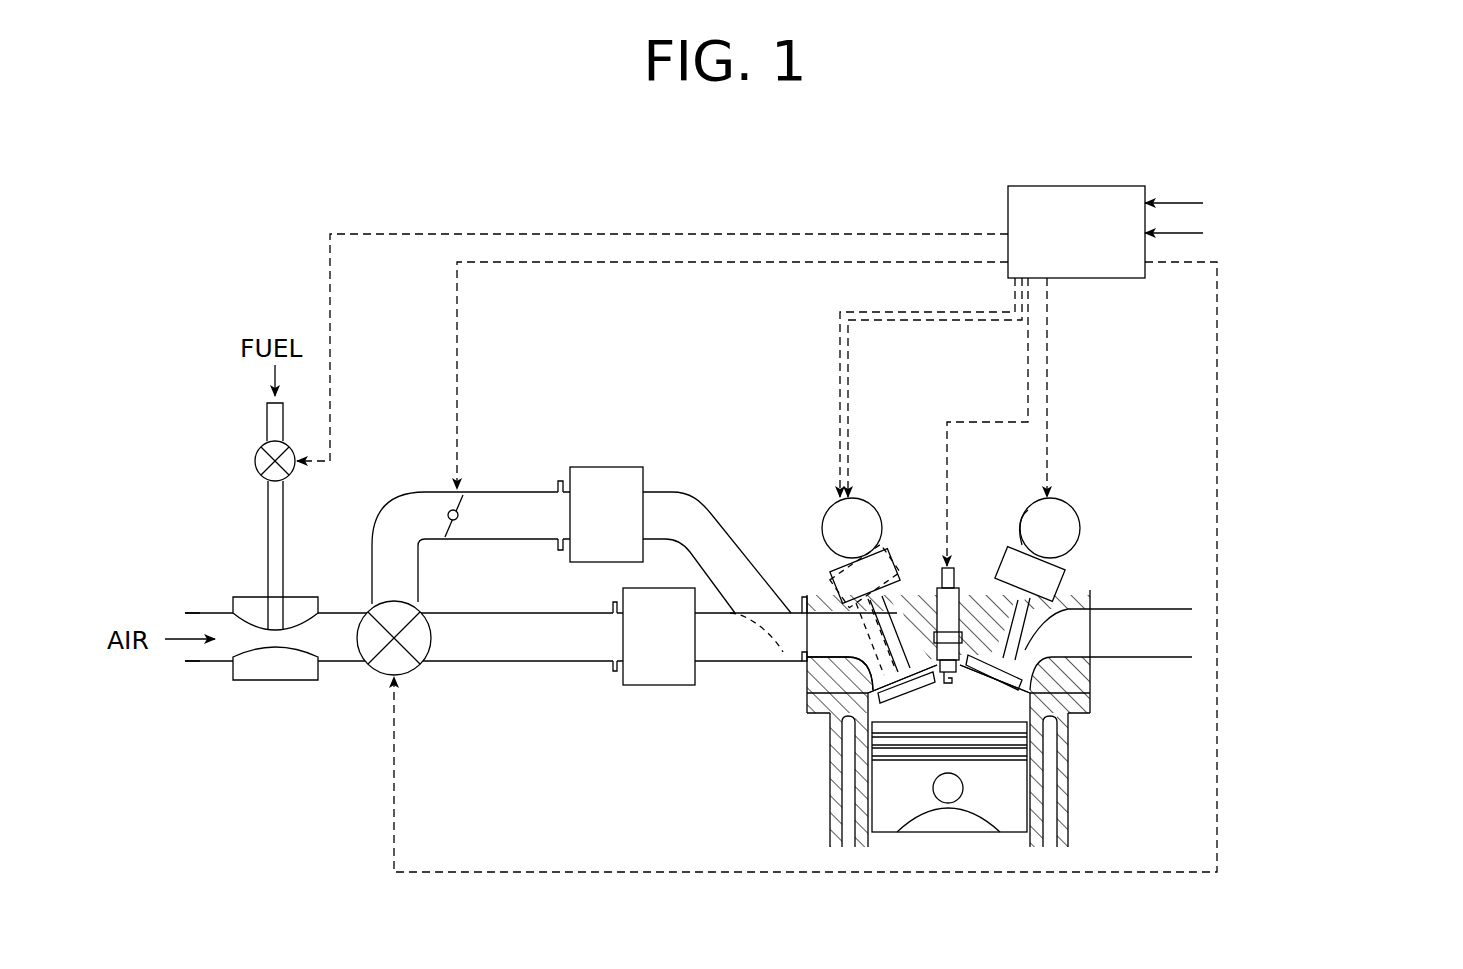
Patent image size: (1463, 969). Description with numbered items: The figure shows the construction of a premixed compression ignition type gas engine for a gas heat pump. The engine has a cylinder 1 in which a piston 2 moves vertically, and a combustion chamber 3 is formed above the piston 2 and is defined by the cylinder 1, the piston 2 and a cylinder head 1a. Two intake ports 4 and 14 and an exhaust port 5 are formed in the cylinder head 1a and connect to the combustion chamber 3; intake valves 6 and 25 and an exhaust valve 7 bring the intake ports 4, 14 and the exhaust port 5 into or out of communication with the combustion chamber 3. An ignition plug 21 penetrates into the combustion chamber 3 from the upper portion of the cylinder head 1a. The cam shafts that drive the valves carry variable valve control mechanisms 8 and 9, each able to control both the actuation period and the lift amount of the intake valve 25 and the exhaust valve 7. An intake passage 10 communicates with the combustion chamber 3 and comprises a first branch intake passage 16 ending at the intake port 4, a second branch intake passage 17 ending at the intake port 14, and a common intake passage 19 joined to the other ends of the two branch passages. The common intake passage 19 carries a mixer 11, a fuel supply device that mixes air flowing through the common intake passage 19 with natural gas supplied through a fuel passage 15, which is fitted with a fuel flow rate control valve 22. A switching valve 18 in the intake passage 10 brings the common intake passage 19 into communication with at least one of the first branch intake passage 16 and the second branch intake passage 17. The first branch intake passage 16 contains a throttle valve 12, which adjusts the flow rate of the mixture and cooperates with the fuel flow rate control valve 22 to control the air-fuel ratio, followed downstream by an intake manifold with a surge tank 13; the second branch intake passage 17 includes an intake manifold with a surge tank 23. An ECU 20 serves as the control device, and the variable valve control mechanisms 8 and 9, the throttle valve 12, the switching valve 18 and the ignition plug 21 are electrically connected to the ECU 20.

The cylinder 1 is at (1070, 785).
The cylinder head 1a is at (1092, 682).
The piston 2 is at (1003, 808).
The combustion chamber 3 is at (1000, 704).
The intake port 4 is at (825, 605).
The exhaust port 5 is at (1056, 630).
The intake valve 6 is at (885, 553).
The exhaust valve 7 is at (1002, 597).
The variable valve control mechanism 8 is at (837, 515).
The variable valve control mechanism 9 is at (1060, 518).
The intake passage 10 is at (410, 426).
The mixer 11 is at (283, 681).
The throttle valve 12 is at (446, 511).
The surge tank 13 is at (608, 467).
The intake port 14 is at (765, 722).
The fuel passage 15 is at (267, 531).
The first branch intake passage 16 is at (513, 476).
The second branch intake passage 17 is at (536, 686).
The switching valve 18 is at (409, 676).
The common intake passage 19 is at (201, 664).
The ECU 20 is at (1079, 186).
The ignition plug 21 is at (940, 571).
The fuel flow rate control valve 22 is at (255, 461).
The surge tank 23 is at (660, 686).
The intake valve 25 is at (836, 694).